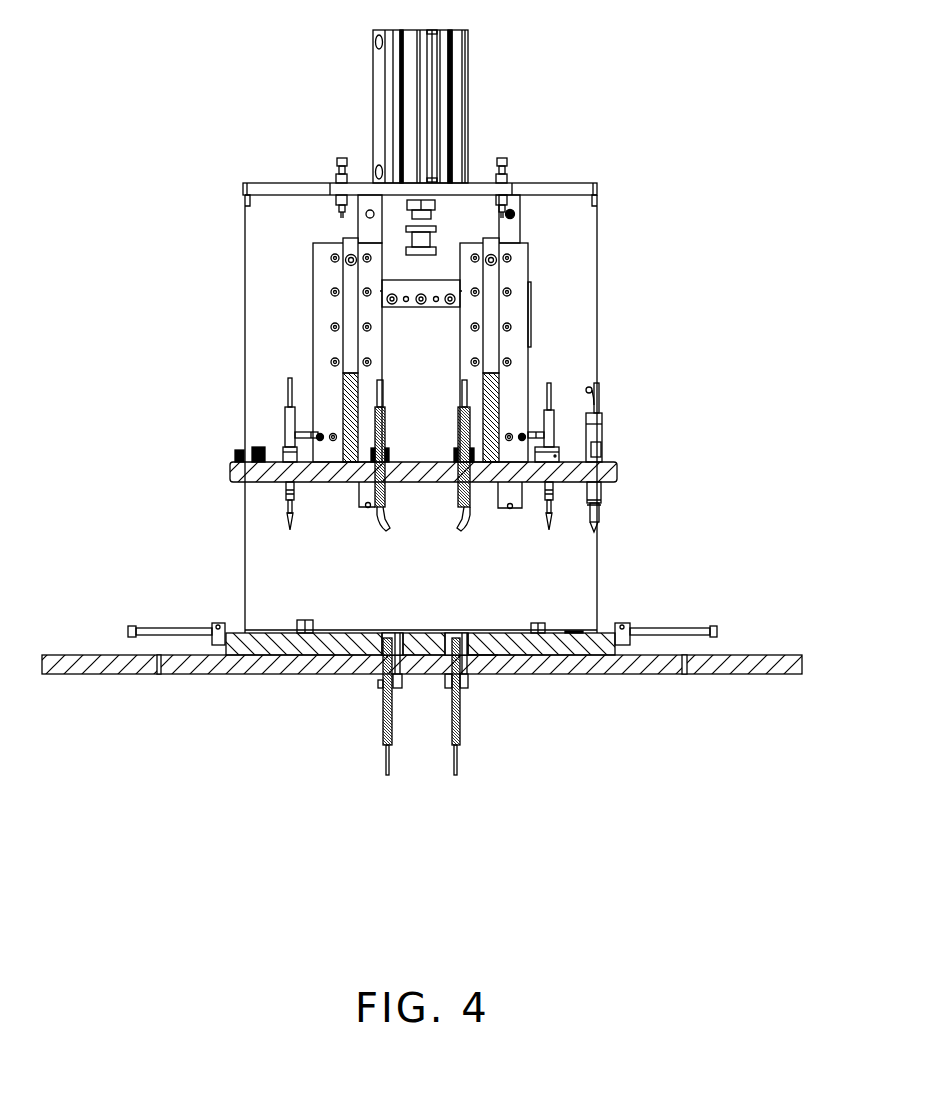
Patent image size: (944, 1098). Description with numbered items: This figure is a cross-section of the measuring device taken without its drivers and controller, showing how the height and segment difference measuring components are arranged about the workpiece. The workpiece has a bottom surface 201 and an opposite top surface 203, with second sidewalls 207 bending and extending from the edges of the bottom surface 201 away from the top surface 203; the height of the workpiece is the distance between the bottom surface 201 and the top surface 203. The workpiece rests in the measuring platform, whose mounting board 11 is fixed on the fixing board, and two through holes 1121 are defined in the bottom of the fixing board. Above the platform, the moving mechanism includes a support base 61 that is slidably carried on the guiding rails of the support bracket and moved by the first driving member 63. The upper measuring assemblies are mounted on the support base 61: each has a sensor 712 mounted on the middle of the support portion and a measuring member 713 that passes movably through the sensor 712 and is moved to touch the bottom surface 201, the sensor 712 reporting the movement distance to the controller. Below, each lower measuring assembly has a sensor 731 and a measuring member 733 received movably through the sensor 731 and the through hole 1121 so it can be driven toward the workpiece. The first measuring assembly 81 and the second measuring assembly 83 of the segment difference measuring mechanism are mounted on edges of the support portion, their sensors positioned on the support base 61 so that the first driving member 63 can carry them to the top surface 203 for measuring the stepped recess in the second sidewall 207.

The first driving member 63 is at (452, 86).
The first measuring assembly 81 is at (548, 428).
The second measuring assembly 83 is at (590, 406).
The sensor 712 is at (375, 418).
The support base 61 is at (613, 470).
The measuring member 713 is at (383, 528).
The bottom surface 201 is at (477, 632).
The mounting board 11 is at (601, 632).
The top surface 203 is at (313, 637).
The second sidewall 207 is at (243, 650).
The through hole 1121 is at (382, 668).
The sensor 731 is at (460, 735).
The measuring member 733 is at (498, 660).